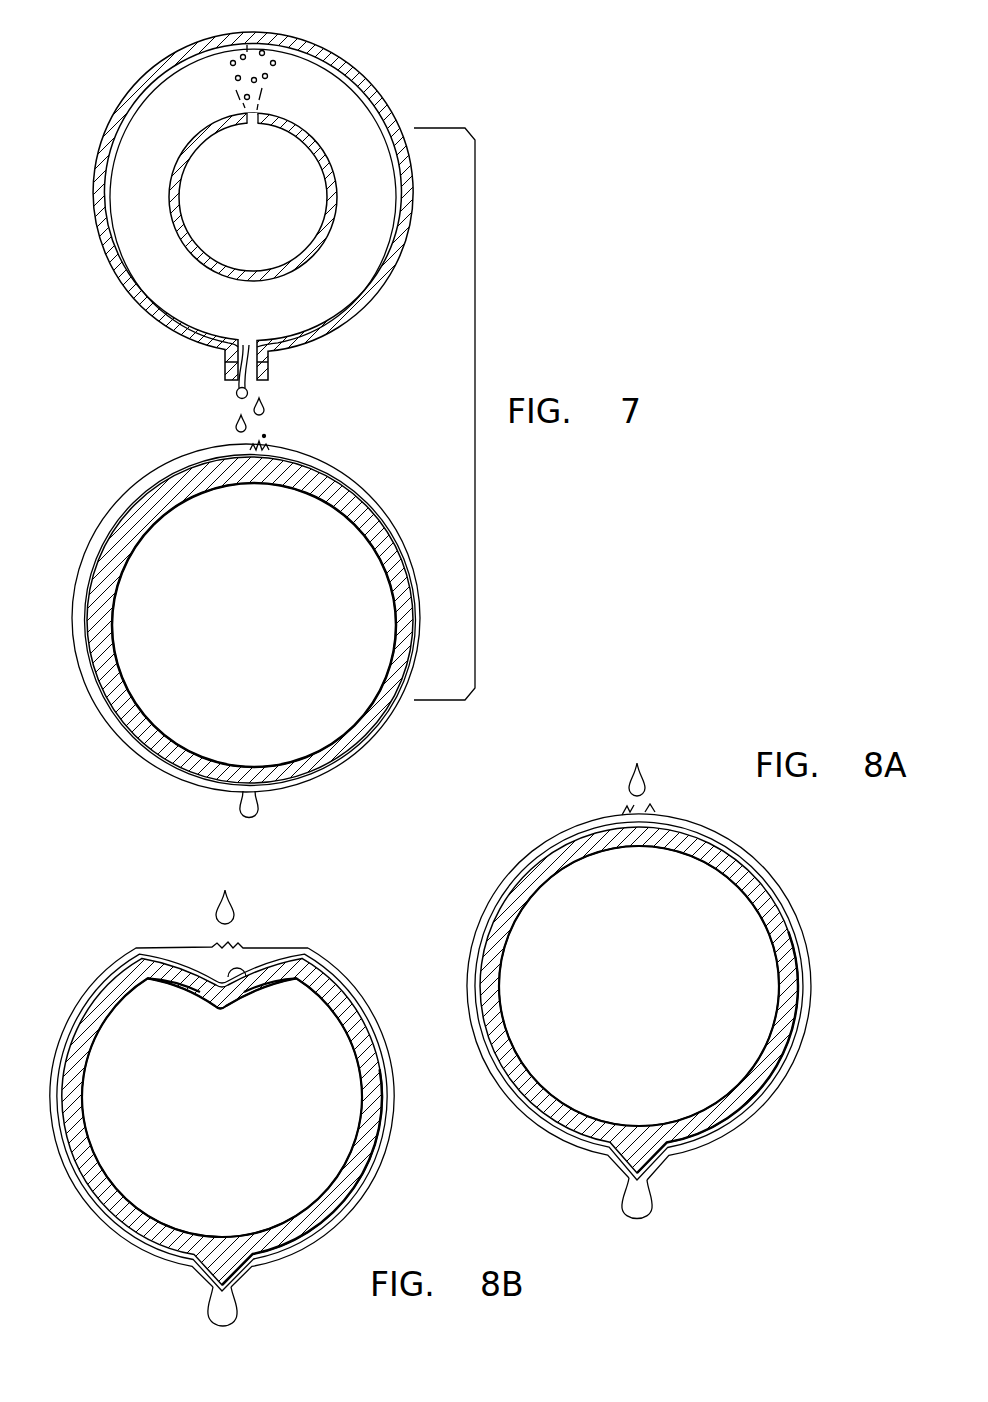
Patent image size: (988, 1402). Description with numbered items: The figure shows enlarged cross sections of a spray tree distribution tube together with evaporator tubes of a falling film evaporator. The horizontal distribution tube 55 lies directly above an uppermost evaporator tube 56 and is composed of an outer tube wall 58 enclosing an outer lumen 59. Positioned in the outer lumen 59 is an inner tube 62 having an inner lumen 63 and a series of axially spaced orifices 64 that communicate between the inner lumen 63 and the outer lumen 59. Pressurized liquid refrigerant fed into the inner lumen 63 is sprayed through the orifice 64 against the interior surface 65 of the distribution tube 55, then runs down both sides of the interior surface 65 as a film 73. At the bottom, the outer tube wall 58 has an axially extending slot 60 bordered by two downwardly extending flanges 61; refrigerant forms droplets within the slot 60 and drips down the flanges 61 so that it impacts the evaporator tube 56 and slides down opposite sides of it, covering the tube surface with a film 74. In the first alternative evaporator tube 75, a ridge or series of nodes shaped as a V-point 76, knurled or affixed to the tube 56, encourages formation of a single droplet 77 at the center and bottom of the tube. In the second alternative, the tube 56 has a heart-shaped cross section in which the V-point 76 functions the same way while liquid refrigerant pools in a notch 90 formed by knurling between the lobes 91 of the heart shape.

In FIG. 7, the horizontal distribution tube 55 is at (385, 97).
In FIG. 7, the evaporator tube 56 is at (346, 748).
In FIG. 7, the outer tube wall 58 is at (350, 320).
In FIG. 7, the outer lumen 59 is at (297, 113).
In FIG. 7, the axially extending slot 60 is at (247, 343).
In FIG. 7, the downwardly extending flanges 61 is at (225, 370).
In FIG. 7, the inner tube 62 is at (333, 177).
In FIG. 7, the inner lumen 63 is at (258, 237).
In FIG. 7, the orifice 64 is at (252, 122).
In FIG. 7, the interior surface 65 is at (247, 47).
In FIG. 7, the film 73 is at (233, 225).
In FIG. 7, the film 74 is at (96, 537).
In FIG. 8A, the evaporator tube 75 is at (517, 893).
In FIG. 8B, the evaporator tube 75 is at (82, 1033).
In FIG. 8A, the V-point 76 is at (643, 1155).
In FIG. 8B, the V-point 76 is at (228, 1265).
In FIG. 8A, the droplet 77 is at (640, 1222).
In FIG. 8B, the droplet 77 is at (218, 1337).
In FIG. 8B, the notch 90 is at (240, 978).
In FIG. 8B, the lobes 91 is at (140, 960).